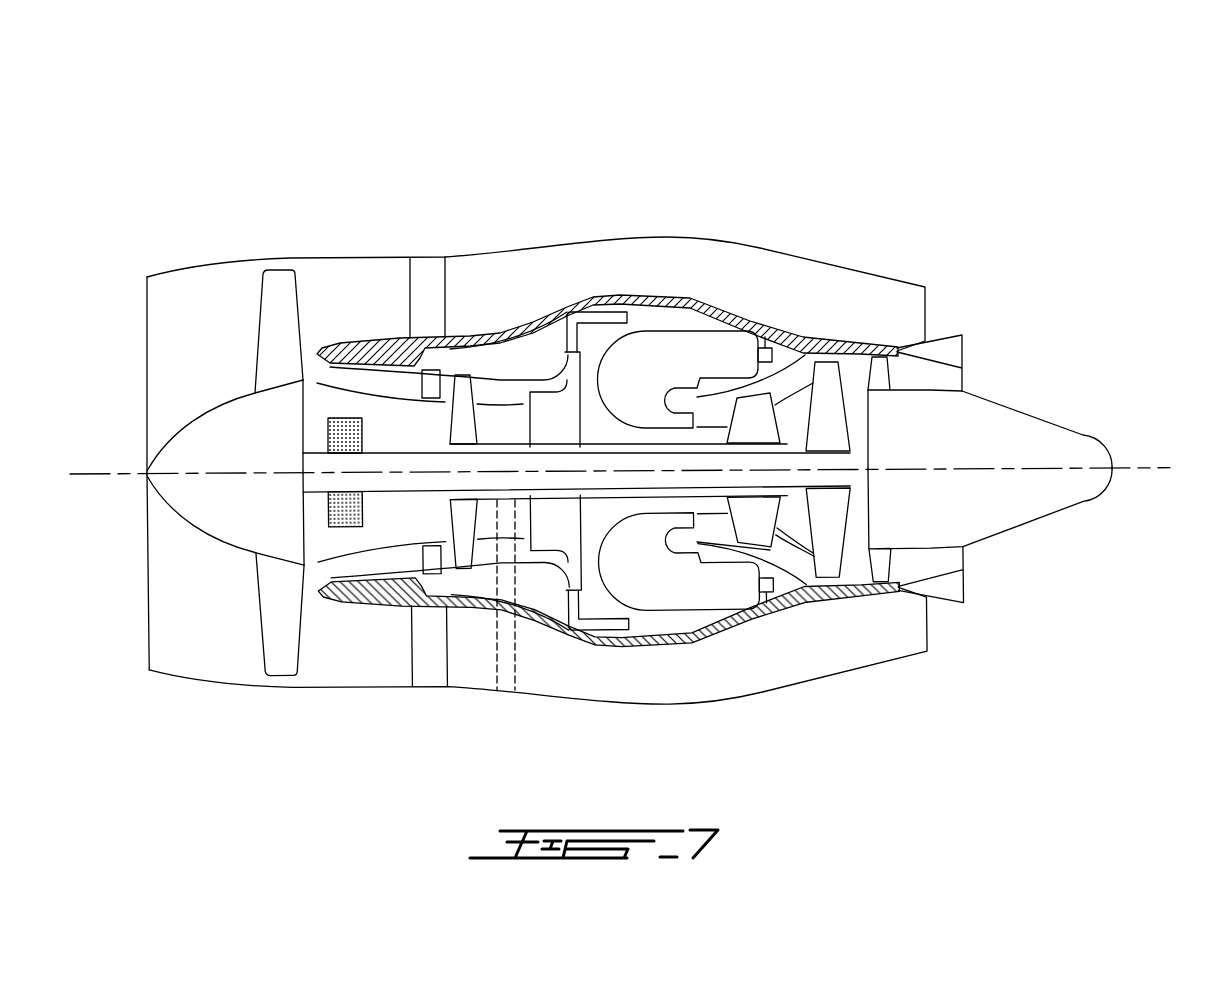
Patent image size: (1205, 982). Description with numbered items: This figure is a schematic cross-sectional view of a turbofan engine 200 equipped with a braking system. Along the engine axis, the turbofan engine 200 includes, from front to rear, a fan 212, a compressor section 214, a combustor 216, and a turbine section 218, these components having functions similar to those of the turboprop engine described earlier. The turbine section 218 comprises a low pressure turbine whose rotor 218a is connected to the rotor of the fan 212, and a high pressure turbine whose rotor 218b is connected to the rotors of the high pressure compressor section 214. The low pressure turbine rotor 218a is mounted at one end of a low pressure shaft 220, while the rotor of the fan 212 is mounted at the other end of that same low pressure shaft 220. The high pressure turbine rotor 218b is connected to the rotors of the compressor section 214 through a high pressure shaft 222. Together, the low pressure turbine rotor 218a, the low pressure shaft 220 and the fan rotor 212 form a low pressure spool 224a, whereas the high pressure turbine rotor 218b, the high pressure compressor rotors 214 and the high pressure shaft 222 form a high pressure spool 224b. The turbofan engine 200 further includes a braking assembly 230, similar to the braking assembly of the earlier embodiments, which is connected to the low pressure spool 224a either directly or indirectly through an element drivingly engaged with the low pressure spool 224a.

The turbofan engine 200 is at (818, 176).
The fan 212 is at (278, 606).
The compressor section 214 is at (492, 385).
The combustor 216 is at (678, 348).
The turbine section 218 is at (792, 527).
The low pressure turbine rotor 218a is at (832, 408).
The high pressure turbine rotor 218b is at (765, 411).
The low pressure shaft 220 is at (697, 543).
The high pressure shaft 222 is at (572, 587).
The low pressure spool 224a is at (676, 450).
The high pressure spool 224b is at (596, 430).
The braking assembly 230 is at (350, 508).